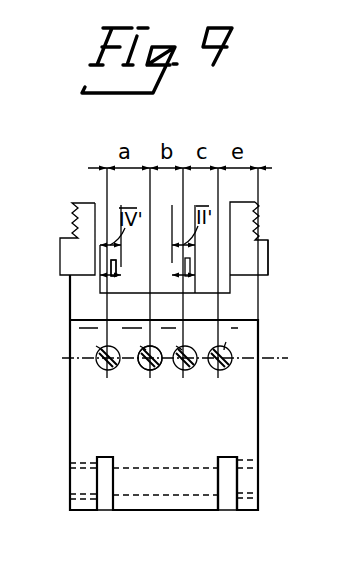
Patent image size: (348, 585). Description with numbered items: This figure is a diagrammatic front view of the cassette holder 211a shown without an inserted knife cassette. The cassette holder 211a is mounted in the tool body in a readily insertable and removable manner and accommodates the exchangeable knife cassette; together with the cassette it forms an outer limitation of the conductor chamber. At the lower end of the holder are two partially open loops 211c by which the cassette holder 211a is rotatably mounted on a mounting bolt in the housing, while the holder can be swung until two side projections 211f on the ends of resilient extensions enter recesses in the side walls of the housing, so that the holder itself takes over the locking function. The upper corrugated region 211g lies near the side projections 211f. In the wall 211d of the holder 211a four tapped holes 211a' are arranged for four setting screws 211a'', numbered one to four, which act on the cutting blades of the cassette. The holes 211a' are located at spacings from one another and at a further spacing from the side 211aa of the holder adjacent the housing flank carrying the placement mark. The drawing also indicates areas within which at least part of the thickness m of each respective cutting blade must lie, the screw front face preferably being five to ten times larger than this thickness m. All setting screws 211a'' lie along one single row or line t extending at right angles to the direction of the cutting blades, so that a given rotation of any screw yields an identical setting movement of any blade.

The cassette holder 211a is at (139, 356).
The side of the holder 211aa is at (262, 420).
The tapped holes 211a' is at (158, 378).
The setting screws 211a'' is at (150, 372).
The partially open loops 211c is at (244, 492).
The wall of the holder 211d is at (233, 440).
The side projections 211f is at (268, 244).
The corrugated gripping surface 211g is at (258, 222).
The thickness of the cutting blades m is at (122, 262).
The row or line t is at (271, 358).